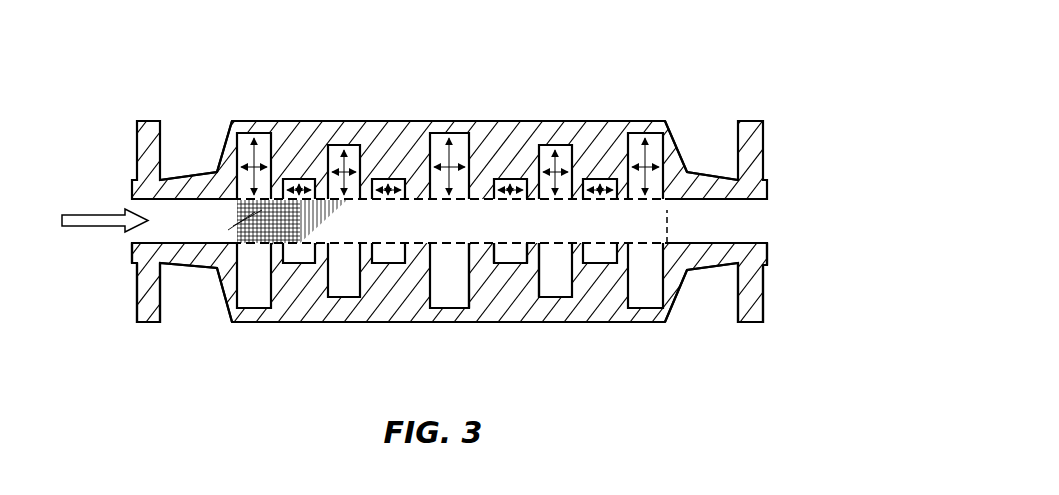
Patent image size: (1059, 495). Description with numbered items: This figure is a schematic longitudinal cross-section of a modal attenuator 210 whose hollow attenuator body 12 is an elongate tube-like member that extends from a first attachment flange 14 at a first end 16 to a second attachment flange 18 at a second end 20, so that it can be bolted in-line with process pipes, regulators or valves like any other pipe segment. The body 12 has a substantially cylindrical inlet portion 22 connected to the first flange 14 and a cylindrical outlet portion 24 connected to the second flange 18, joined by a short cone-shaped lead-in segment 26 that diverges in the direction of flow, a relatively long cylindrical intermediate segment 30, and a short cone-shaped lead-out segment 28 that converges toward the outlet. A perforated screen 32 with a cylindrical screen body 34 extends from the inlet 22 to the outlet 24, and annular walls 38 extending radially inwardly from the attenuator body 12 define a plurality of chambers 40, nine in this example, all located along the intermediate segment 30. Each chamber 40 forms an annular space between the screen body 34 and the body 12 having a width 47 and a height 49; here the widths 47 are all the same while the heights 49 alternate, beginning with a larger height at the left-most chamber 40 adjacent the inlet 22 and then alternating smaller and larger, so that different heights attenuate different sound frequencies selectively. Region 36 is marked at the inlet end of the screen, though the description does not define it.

The modal attenuator 210 is at (695, 65).
The hollow attenuator body 12 is at (408, 324).
The first attachment flange 14 is at (136, 297).
The first end 16 is at (132, 255).
The second attachment flange 18 is at (767, 297).
The second end 20 is at (767, 253).
The inlet portion 22 is at (180, 231).
The outlet portion 24 is at (708, 231).
The lead-in segment 26 is at (223, 312).
The lead-out segment 28 is at (680, 292).
The intermediate segment 30 is at (603, 310).
The perforated screen 32 is at (668, 202).
The screen body 34 is at (243, 205).
The flow disturbance region 36 is at (238, 222).
The annular walls 38 is at (535, 253).
The chambers 40 is at (244, 267).
The width 47 is at (446, 162).
The height 49 is at (452, 166).